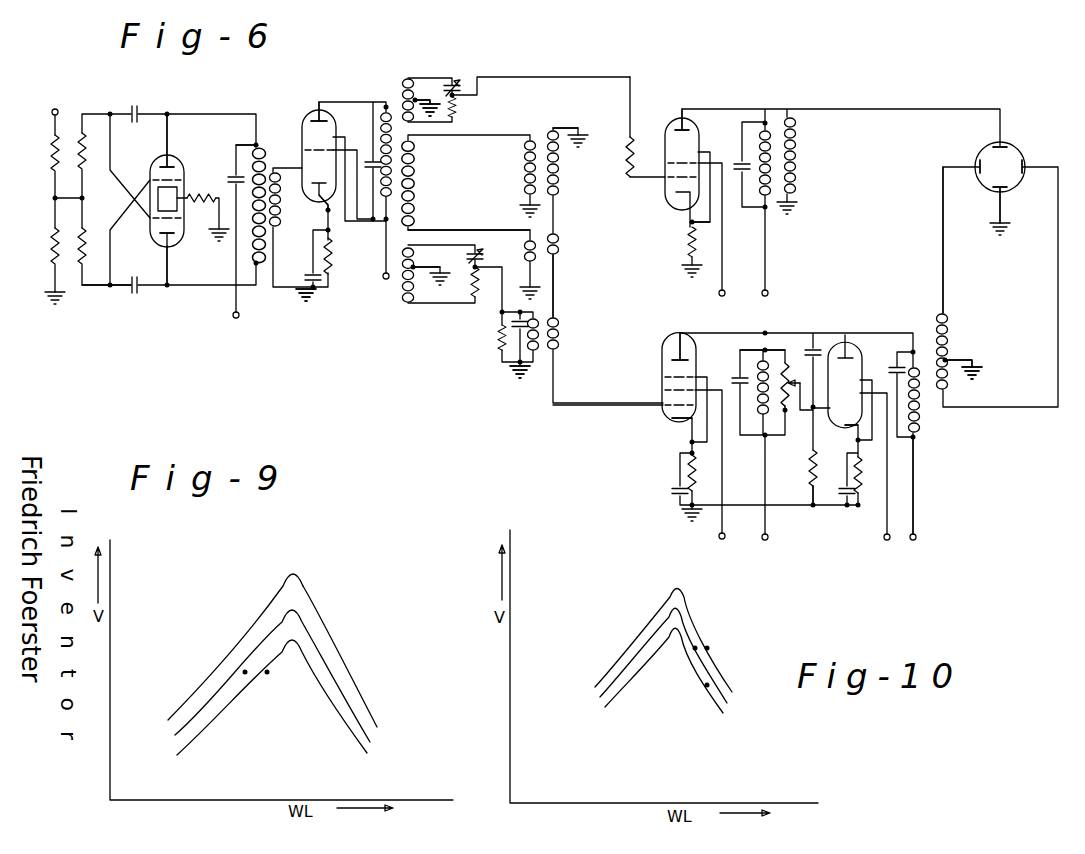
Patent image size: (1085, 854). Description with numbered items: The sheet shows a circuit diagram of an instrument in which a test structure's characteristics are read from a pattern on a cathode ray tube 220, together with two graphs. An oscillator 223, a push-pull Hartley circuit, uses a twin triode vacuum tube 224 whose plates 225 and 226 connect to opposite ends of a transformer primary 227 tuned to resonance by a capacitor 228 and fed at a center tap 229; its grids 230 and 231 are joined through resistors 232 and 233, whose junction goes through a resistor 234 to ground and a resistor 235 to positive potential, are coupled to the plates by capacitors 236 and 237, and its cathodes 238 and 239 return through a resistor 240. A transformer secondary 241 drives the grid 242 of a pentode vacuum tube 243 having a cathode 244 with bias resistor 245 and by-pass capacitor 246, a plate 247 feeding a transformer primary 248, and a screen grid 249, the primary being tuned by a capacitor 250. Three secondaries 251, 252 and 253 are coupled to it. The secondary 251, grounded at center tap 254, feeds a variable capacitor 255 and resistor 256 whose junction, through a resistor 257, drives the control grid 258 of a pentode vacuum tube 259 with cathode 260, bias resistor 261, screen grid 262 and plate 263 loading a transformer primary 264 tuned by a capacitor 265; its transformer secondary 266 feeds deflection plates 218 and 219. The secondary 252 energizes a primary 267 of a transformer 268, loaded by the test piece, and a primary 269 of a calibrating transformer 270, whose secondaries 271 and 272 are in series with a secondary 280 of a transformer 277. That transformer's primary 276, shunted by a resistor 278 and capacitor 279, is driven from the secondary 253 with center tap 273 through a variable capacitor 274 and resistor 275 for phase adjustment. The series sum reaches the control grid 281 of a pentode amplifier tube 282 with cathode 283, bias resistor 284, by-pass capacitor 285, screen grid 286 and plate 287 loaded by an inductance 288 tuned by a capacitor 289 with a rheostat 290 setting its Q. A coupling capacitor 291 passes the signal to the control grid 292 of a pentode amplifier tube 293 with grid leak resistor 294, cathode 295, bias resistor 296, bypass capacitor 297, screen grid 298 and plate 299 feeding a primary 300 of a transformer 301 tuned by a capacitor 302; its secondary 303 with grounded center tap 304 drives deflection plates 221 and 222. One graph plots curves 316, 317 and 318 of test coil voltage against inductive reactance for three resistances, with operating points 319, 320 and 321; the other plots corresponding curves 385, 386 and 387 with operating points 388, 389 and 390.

In FIG. 6, the deflection plate 218 is at (1002, 147).
In FIG. 6, the deflection plate 219 is at (994, 190).
In FIG. 6, the cathode ray tube 220 is at (1018, 151).
In FIG. 6, the deflection plate 221 is at (977, 161).
In FIG. 6, the deflection plate 222 is at (1028, 177).
In FIG. 6, the oscillator 223 is at (210, 124).
In FIG. 6, the twin triode vacuum tube 224 is at (140, 292).
In FIG. 6, the plate 225 is at (163, 158).
In FIG. 6, the plate 226 is at (167, 275).
In FIG. 6, the transformer primary 227 is at (253, 144).
In FIG. 6, the capacitor 228 is at (233, 174).
In FIG. 6, the center tap 229 is at (251, 215).
In FIG. 6, the grid 230 is at (154, 178).
In FIG. 6, the grid 231 is at (175, 238).
In FIG. 6, the resistor 232 is at (88, 165).
In FIG. 6, the resistor 233 is at (88, 240).
In FIG. 6, the resistor 234 is at (52, 245).
In FIG. 6, the resistor 235 is at (58, 130).
In FIG. 6, the capacitor 236 is at (130, 292).
In FIG. 6, the capacitor 237 is at (140, 104).
In FIG. 6, the cathode 238 is at (181, 181).
In FIG. 6, the cathode 239 is at (152, 220).
In FIG. 6, the resistor 240 is at (205, 205).
In FIG. 6, the transformer secondary 241 is at (274, 228).
In FIG. 6, the grid 242 is at (326, 210).
In FIG. 6, the pentode vacuum tube 243 is at (304, 125).
In FIG. 6, the cathode 244 is at (320, 230).
In FIG. 6, the bias resistor 245 is at (332, 262).
In FIG. 6, the by-pass capacitor 246 is at (300, 290).
In FIG. 6, the plate 247 is at (312, 112).
In FIG. 6, the transformer primary 248 is at (386, 106).
In FIG. 6, the screen grid 249 is at (307, 150).
In FIG. 6, the capacitor 250 is at (371, 150).
In FIG. 6, the transformer secondary 251 is at (408, 80).
In FIG. 6, the transformer secondary 252 is at (415, 155).
In FIG. 6, the transformer secondary 253 is at (412, 300).
In FIG. 6, the center tap 254 is at (416, 98).
In FIG. 6, the variable capacitor 255 is at (456, 84).
In FIG. 6, the resistor 256 is at (458, 110).
In FIG. 6, the resistor 257 is at (628, 140).
In FIG. 6, the control grid 258 is at (668, 180).
In FIG. 6, the pentode vacuum tube 259 is at (668, 130).
In FIG. 6, the cathode 260 is at (688, 218).
In FIG. 6, the bias resistor 261 is at (690, 242).
In FIG. 6, the screen grid 262 is at (670, 163).
In FIG. 6, the plate 263 is at (682, 118).
In FIG. 6, the transformer primary 264 is at (766, 122).
In FIG. 6, the capacitor 265 is at (740, 162).
In FIG. 6, the transformer secondary 266 is at (795, 158).
In FIG. 6, the primary 267 is at (520, 158).
In FIG. 6, the transformer 268 is at (545, 127).
In FIG. 6, the primary 269 is at (538, 237).
In FIG. 6, the transformer 270 is at (545, 274).
In FIG. 6, the secondary 271 is at (558, 173).
In FIG. 6, the secondary 272 is at (557, 250).
In FIG. 6, the center tap 273 is at (416, 266).
In FIG. 6, the variable capacitor 274 is at (482, 257).
In FIG. 6, the resistor 275 is at (477, 293).
In FIG. 6, the primary 276 is at (532, 355).
In FIG. 6, the transformer 277 is at (546, 306).
In FIG. 6, the resistor 278 is at (500, 335).
In FIG. 6, the capacitor 279 is at (514, 360).
In FIG. 6, the secondary 280 is at (560, 333).
In FIG. 6, the control grid 281 is at (668, 407).
In FIG. 6, the pentode amplifier tube 282 is at (672, 360).
In FIG. 6, the cathode 283 is at (668, 418).
In FIG. 6, the bias resistor 284 is at (696, 473).
In FIG. 6, the by-pass capacitor 285 is at (677, 482).
In FIG. 6, the screen grid 286 is at (663, 385).
In FIG. 6, the plate 287 is at (678, 350).
In FIG. 6, the inductance 288 is at (752, 435).
In FIG. 6, the capacitor 289 is at (738, 380).
In FIG. 6, the rheostat 290 is at (788, 360).
In FIG. 6, the coupling capacitor 291 is at (813, 340).
In FIG. 6, the control grid 292 is at (812, 453).
In FIG. 6, the pentode amplifier tube 293 is at (898, 366).
In FIG. 6, the grid leak resistor 294 is at (813, 506).
In FIG. 6, the cathode 295 is at (850, 425).
In FIG. 6, the bias resistor 296 is at (858, 480).
In FIG. 6, the bypass capacitor 297 is at (845, 508).
In FIG. 6, the screen grid 298 is at (802, 415).
In FIG. 6, the plate 299 is at (842, 357).
In FIG. 6, the primary 300 is at (920, 370).
In FIG. 6, the transformer 301 is at (936, 314).
In FIG. 6, the capacitor 302 is at (913, 440).
In FIG. 6, the secondary 303 is at (946, 337).
In FIG. 6, the center tap 304 is at (948, 358).
In FIG. 9, the curve 316 is at (324, 665).
In FIG. 9, the curve 317 is at (305, 653).
In FIG. 9, the curve 318 is at (352, 685).
In FIG. 9, the point 319 is at (245, 673).
In FIG. 9, the point 320 is at (268, 673).
In FIG. 9, the point 321 is at (275, 598).
In FIG. 10, the curve 385 is at (694, 636).
In FIG. 10, the curve 386 is at (715, 707).
In FIG. 10, the curve 387 is at (693, 618).
In FIG. 10, the point 388 is at (695, 649).
In FIG. 10, the point 389 is at (707, 686).
In FIG. 10, the point 390 is at (708, 648).